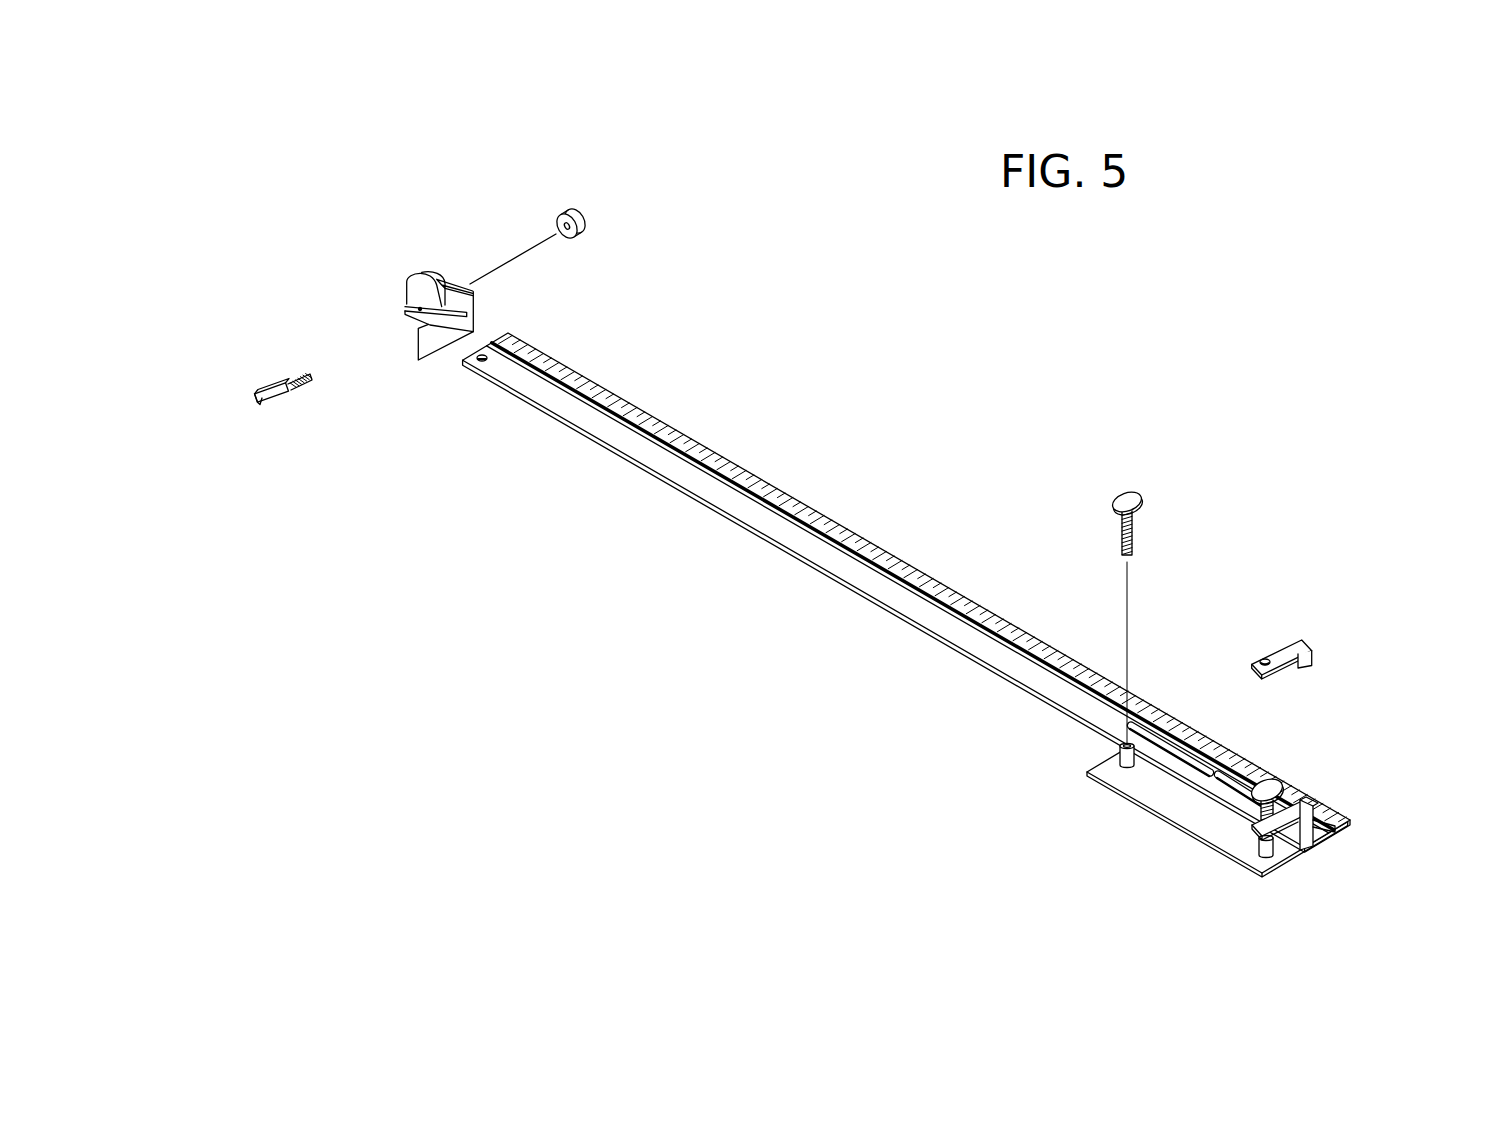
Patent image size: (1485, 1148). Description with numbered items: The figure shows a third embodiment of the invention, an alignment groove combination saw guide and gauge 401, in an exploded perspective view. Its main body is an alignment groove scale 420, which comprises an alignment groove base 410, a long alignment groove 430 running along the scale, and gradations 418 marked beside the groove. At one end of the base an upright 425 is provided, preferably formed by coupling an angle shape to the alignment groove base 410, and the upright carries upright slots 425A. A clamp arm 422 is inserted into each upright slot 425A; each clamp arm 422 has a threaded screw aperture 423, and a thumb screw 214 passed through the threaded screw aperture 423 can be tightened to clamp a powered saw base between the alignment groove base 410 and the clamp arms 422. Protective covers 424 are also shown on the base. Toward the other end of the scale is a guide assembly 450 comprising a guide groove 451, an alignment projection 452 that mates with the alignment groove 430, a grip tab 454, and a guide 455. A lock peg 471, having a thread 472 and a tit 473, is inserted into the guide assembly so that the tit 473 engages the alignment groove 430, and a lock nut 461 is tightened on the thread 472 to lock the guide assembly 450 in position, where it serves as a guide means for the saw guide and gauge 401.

The thumb screw 214 is at (1130, 490).
The alignment groove combination saw guide and gauge 401 is at (895, 639).
The alignment groove base 410 is at (1093, 781).
The gradations 418 is at (750, 477).
The alignment groove scale 420 is at (888, 597).
The clamp arm 422 is at (1300, 652).
The threaded screw aperture 423 is at (1262, 660).
The protective cover 424 is at (1118, 747).
The upright 425 is at (1291, 835).
The upright slot 425A is at (1236, 801).
The alignment groove 430 is at (887, 557).
The guide assembly 450 is at (416, 355).
The guide groove 451 is at (470, 315).
The alignment projection 452 is at (440, 318).
The grip tab 454 is at (417, 293).
The guide 455 is at (437, 340).
The lock nut 461 is at (586, 217).
The lock peg 471 is at (250, 404).
The thread 472 is at (292, 386).
The tit 473 is at (263, 406).